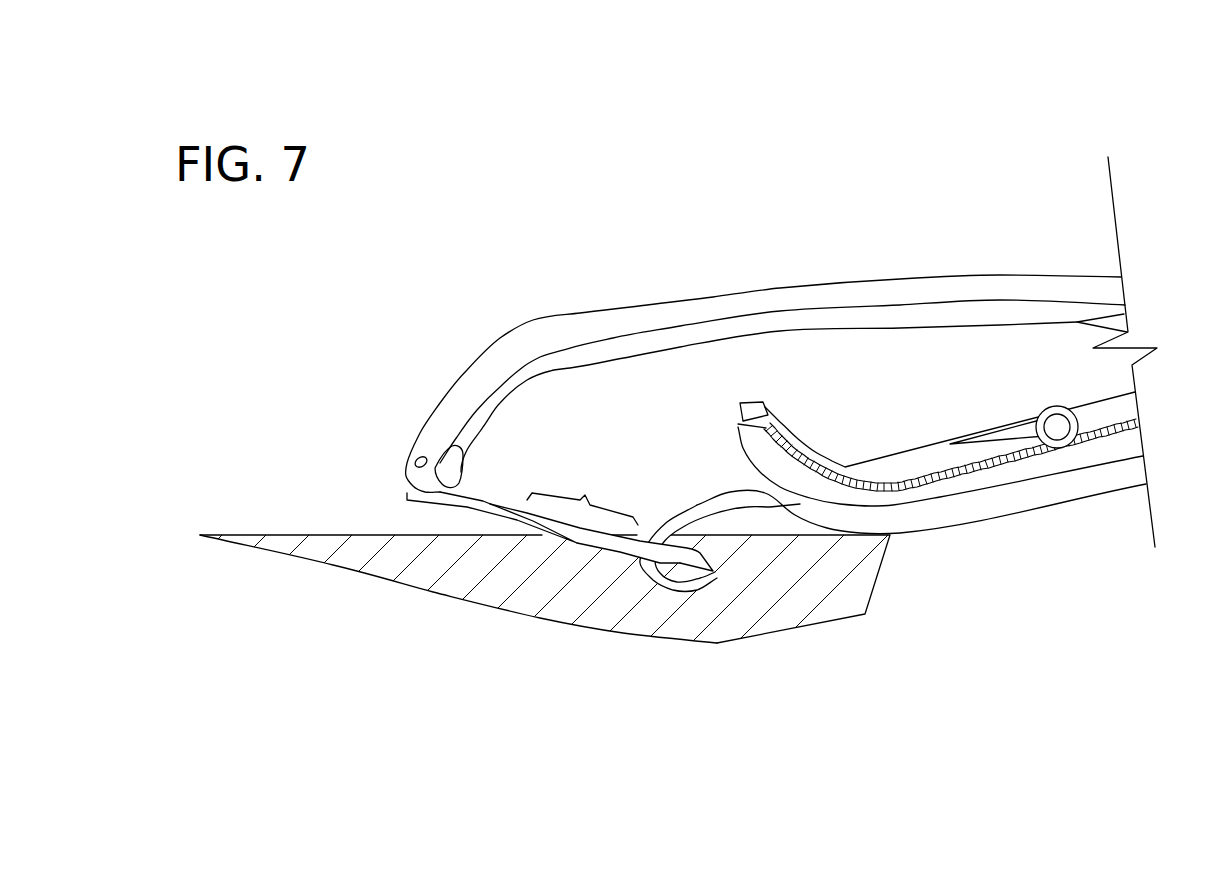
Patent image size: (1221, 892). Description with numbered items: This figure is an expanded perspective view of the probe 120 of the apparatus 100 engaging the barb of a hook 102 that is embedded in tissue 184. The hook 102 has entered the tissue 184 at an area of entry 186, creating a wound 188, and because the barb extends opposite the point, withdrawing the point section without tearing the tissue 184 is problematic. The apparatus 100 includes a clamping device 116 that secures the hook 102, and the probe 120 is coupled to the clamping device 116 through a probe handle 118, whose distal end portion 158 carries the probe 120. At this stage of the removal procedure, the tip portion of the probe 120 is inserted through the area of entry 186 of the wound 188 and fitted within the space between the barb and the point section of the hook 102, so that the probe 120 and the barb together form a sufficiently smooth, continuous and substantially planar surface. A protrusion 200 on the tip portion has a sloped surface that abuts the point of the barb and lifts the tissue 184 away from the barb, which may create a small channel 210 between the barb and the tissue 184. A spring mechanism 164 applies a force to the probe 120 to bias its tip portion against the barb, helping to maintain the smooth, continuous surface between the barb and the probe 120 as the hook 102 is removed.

The apparatus 100 is at (781, 292).
The hook 102 is at (892, 448).
The clamping device 116 is at (1066, 512).
The probe handle 118 is at (781, 352).
The probe 120 is at (484, 479).
The distal end portion 158 is at (777, 289).
The spring mechanism 164 is at (438, 501).
The tissue 184 is at (432, 594).
The area of entry 186 is at (582, 496).
The wound 188 is at (596, 558).
The protrusion 200 is at (680, 565).
The channel 210 is at (720, 550).